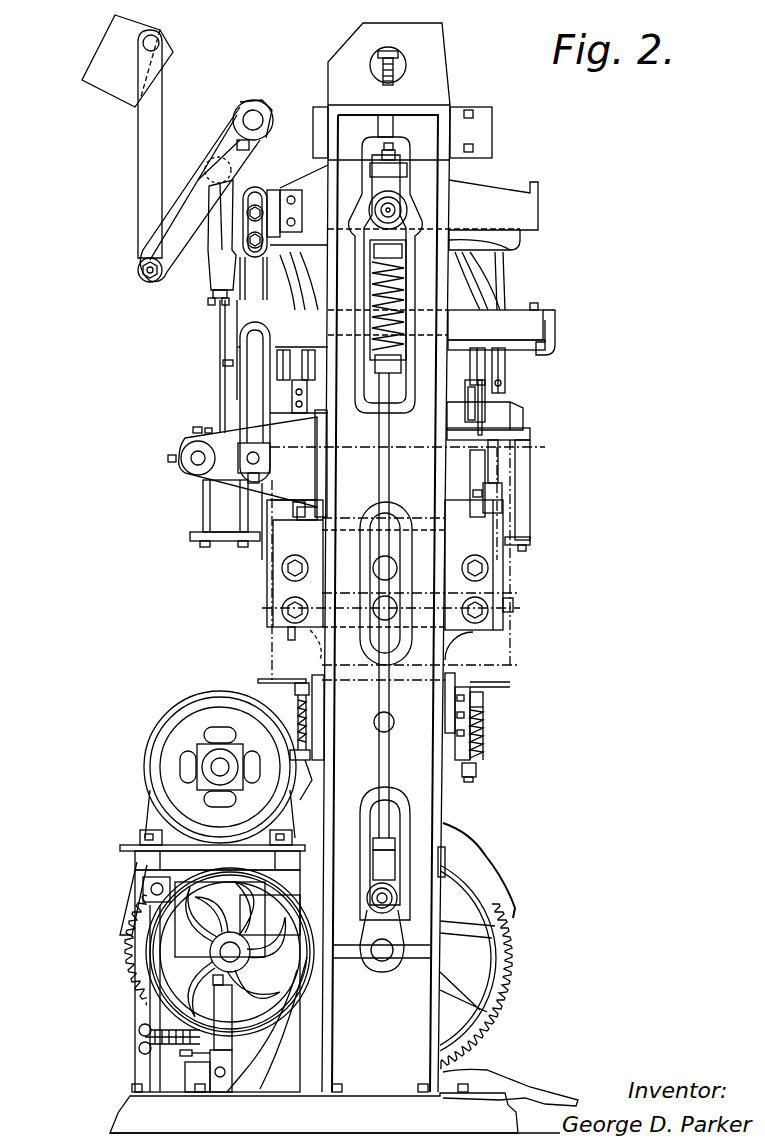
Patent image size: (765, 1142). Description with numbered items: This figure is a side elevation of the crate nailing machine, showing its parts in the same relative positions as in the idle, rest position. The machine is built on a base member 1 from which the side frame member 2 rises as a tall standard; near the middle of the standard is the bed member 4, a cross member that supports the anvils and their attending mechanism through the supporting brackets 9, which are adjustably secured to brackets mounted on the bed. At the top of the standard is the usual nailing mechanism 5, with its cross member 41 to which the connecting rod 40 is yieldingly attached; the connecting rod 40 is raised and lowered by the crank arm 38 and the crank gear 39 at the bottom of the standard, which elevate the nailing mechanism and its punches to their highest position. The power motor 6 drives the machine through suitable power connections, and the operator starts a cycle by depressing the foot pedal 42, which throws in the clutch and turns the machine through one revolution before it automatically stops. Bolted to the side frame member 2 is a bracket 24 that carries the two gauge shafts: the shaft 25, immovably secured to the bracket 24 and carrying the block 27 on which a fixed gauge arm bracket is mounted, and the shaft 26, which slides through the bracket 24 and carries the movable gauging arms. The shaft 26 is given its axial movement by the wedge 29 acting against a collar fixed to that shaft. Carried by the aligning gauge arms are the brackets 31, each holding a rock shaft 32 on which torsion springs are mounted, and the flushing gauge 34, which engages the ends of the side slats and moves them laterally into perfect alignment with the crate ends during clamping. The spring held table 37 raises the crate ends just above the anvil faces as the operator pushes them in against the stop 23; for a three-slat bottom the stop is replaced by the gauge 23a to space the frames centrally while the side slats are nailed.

The base member 1 is at (335, 1113).
The side frame member 2 is at (338, 557).
The bed member 4 is at (457, 712).
The nailing mechanism 5 is at (417, 303).
The power motor 6 is at (198, 723).
The bracket 9 is at (483, 588).
The stop 23 is at (318, 634).
The gauge 23a is at (290, 633).
The bracket 24 is at (298, 465).
The shaft 25 is at (190, 468).
The shaft 26 is at (250, 462).
The block 27 is at (220, 512).
The wedge 29 is at (243, 400).
The bracket 31 is at (483, 402).
The rock shaft 32 is at (455, 385).
The flushing gauge 34 is at (455, 412).
The spring held table 37 is at (473, 686).
The crank arm 38 is at (390, 928).
The crank gear 39 is at (515, 942).
The connecting rod 40 is at (386, 762).
The cross member 41 is at (522, 212).
The foot pedal 42 is at (547, 1090).